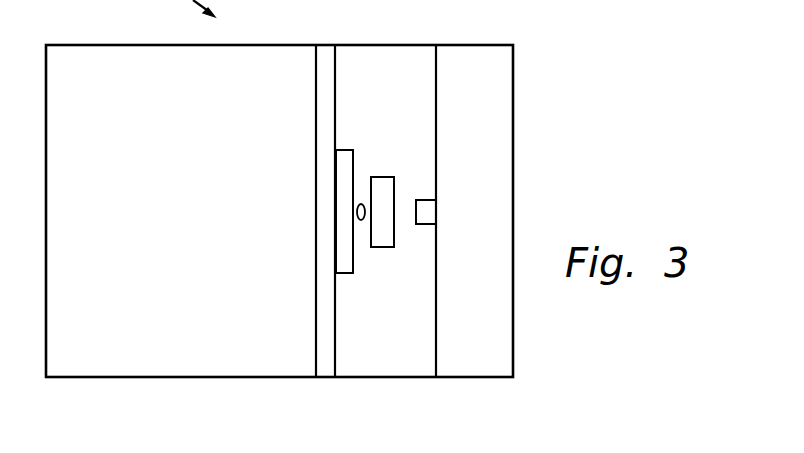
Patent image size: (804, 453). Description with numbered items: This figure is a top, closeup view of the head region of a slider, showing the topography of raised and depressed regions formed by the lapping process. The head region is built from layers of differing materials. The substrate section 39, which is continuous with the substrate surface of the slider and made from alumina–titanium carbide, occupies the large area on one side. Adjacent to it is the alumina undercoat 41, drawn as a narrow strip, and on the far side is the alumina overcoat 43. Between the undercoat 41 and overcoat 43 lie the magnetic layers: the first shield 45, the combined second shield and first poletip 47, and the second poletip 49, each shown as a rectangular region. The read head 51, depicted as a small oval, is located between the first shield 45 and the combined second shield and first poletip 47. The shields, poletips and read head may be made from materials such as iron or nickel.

The substrate section 39 is at (128, 352).
The alumina undercoat 41 is at (326, 57).
The alumina overcoat 43 is at (473, 68).
The shield 1 45 is at (343, 273).
The shield 2/poletip 1 47 is at (381, 247).
The poletip 2 49 is at (425, 215).
The read head 51 is at (361, 204).